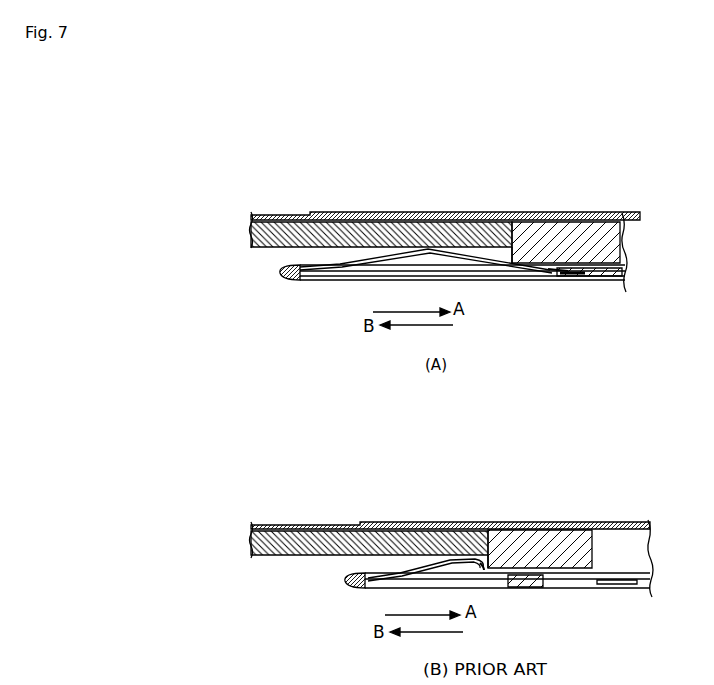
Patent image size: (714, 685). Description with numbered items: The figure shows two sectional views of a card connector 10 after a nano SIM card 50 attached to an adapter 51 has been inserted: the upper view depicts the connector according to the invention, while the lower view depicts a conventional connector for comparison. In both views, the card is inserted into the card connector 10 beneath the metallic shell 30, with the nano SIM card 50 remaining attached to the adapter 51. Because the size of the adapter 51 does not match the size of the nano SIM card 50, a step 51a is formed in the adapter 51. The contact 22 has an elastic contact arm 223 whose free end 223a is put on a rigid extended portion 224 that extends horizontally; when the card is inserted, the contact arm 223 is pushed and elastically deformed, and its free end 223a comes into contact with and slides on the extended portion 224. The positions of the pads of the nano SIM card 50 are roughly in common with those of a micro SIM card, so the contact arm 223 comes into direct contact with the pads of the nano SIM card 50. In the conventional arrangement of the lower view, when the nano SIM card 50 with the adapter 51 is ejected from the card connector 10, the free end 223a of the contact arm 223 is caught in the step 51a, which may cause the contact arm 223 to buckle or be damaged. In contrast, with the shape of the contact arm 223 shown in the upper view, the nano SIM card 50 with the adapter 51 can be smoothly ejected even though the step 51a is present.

The card connector 10 is at (645, 148).
The contact 22 is at (380, 254).
The shell 30 is at (568, 213).
The nano SIM card 50 is at (325, 227).
The adapter 51 is at (535, 237).
The step 51a is at (512, 257).
The contact arm 223 is at (463, 260).
The free end 223a is at (568, 270).
The extended portion 224 is at (582, 273).